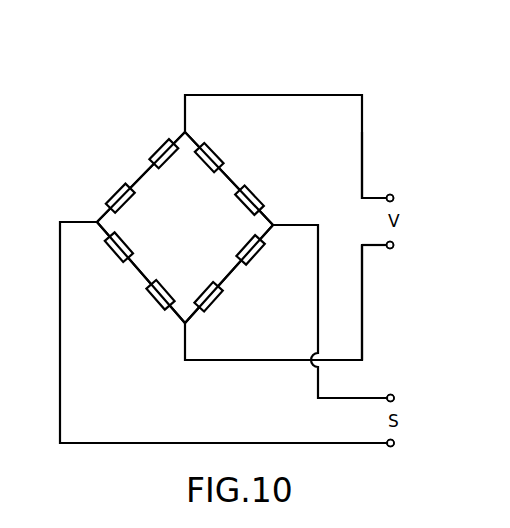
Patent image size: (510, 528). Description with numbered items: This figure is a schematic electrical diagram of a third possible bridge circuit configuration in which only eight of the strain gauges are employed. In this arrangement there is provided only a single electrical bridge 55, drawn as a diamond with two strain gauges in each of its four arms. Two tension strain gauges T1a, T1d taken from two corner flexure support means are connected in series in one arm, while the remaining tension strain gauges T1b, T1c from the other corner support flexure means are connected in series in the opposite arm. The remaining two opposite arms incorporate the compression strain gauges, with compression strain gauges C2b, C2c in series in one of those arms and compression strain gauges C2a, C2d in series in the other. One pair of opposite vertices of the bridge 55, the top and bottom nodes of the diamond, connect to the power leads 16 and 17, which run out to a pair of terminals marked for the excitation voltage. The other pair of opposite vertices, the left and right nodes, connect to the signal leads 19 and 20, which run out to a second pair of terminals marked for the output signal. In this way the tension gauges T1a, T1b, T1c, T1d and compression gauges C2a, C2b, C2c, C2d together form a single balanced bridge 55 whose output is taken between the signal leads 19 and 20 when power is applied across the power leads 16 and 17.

The electrical bridge 55 is at (193, 235).
The power lead 16 is at (362, 133).
The power lead 17 is at (362, 280).
The signal lead 19 is at (367, 398).
The signal lead 20 is at (325, 444).
The tension strain gauge T1a is at (152, 149).
The tension strain gauge T1b is at (263, 258).
The tension strain gauge T1c is at (222, 304).
The tension strain gauge T1d is at (108, 193).
The compression strain gauge C2a is at (106, 256).
The compression strain gauge C2b is at (223, 151).
The compression strain gauge C2c is at (263, 195).
The compression strain gauge C2d is at (145, 303).